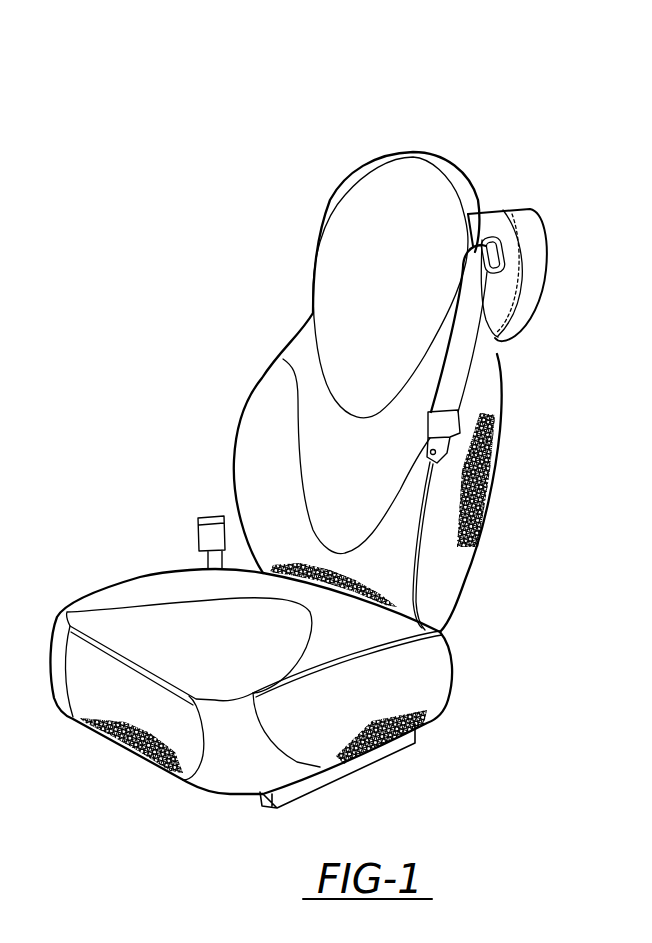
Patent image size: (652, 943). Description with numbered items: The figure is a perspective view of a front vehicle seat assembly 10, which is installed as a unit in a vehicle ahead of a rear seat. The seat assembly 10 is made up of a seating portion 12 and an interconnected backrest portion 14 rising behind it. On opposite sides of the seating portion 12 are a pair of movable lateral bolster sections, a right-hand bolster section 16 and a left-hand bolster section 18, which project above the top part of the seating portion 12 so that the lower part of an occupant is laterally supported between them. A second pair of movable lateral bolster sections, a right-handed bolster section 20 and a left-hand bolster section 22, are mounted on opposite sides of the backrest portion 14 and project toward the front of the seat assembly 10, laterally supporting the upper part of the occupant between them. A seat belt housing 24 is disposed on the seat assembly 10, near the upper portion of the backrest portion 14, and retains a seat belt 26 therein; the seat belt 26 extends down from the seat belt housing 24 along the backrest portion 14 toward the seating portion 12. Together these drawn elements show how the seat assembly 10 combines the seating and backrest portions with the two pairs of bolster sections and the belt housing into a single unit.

The seat assembly 10 is at (221, 221).
The seating portion 12 is at (113, 633).
The backrest portion 14 is at (511, 379).
The right-hand bolster section 16 is at (154, 591).
The left-hand bolster section 18 is at (326, 651).
The right-handed bolster section 20 is at (252, 393).
The left-hand bolster section 22 is at (453, 507).
The seat belt housing 24 is at (521, 222).
The seat belt 26 is at (463, 354).